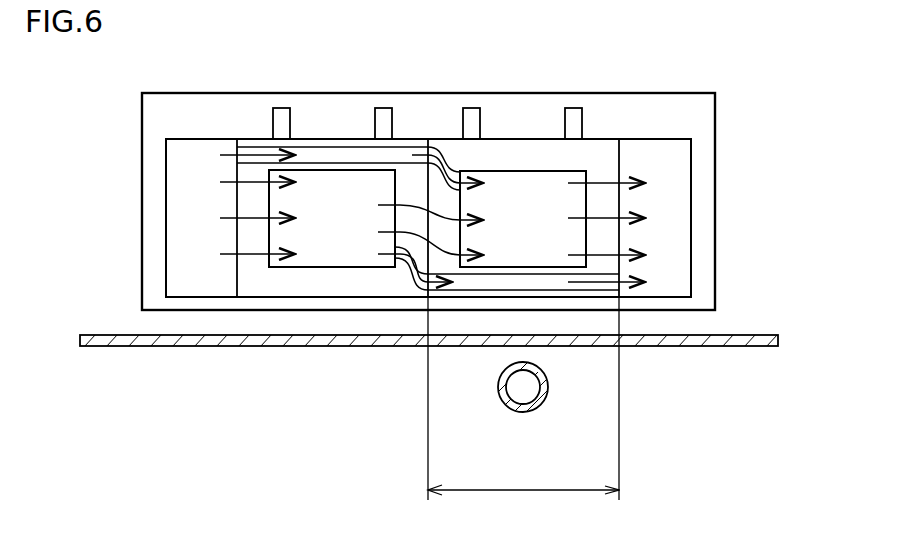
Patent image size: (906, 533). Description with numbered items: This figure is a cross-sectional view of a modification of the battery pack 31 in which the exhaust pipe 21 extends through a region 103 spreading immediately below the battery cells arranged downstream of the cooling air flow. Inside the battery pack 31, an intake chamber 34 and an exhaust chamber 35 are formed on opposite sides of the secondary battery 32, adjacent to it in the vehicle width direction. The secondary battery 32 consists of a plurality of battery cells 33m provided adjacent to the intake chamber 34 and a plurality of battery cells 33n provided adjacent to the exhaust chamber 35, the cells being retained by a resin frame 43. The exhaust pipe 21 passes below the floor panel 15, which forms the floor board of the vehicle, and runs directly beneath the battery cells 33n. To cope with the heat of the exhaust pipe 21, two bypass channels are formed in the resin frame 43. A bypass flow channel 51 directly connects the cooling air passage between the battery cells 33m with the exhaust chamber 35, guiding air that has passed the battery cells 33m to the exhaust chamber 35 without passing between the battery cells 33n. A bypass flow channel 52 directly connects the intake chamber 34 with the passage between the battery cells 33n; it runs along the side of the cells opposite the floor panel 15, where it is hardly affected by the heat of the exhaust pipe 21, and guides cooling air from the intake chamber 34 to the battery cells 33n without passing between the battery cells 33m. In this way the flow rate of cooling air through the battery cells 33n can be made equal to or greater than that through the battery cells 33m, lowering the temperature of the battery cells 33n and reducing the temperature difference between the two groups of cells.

The battery pack 31 is at (181, 93).
The secondary battery 32 is at (598, 130).
The battery cells 33m is at (347, 170).
The battery cells 33n is at (528, 171).
The intake chamber 34 is at (188, 203).
The exhaust chamber 35 is at (668, 203).
The resin frame 43 is at (413, 139).
The bypass flow channel 52 is at (312, 148).
The bypass flow channel 51 is at (543, 284).
The floor panel 15 is at (745, 342).
The exhaust pipe 21 is at (522, 412).
The region 103 is at (523, 398).